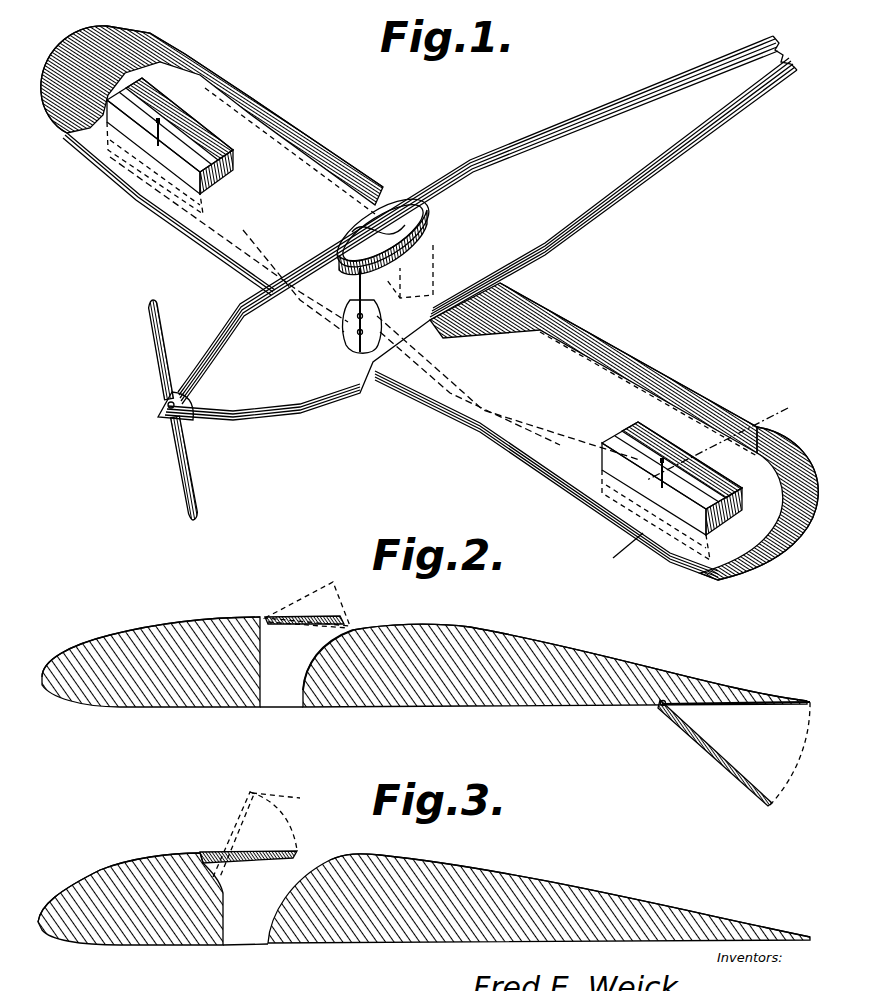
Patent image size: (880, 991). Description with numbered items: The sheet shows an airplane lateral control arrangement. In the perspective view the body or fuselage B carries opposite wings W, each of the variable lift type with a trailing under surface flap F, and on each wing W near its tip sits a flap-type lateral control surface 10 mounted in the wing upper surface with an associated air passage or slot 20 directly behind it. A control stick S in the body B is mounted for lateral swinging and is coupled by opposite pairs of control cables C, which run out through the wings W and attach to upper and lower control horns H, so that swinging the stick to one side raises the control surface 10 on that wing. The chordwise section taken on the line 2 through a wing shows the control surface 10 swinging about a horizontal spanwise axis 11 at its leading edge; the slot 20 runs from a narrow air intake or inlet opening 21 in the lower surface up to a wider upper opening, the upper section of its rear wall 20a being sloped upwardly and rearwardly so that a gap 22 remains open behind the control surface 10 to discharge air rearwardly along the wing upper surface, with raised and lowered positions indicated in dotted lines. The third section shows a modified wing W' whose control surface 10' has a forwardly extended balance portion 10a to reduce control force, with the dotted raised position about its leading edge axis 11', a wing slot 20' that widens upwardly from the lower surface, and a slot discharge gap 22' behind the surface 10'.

In FIG. 1, the body or fuselage B is at (568, 203).
In FIG. 1, the wing W is at (429, 303).
In FIG. 2, the wing W is at (424, 647).
In FIG. 1, the trailing under surface flap F is at (295, 140).
In FIG. 2, the trailing under surface flap F is at (717, 757).
In FIG. 1, the section line 2— 2 is at (702, 486).
In FIG. 1, the lateral control surface 10 is at (424, 306).
In FIG. 2, the lateral control surface 10 is at (327, 603).
In FIG. 1, the gap 22 is at (435, 290).
In FIG. 2, the gap 22 is at (555, 649).
In FIG. 1, the control horn H is at (160, 122).
In FIG. 1, the air passage or slot 20 is at (428, 368).
In FIG. 2, the air passage or slot 20 is at (157, 679).
In FIG. 1, the air intake or inlet opening 21 is at (203, 190).
In FIG. 2, the air intake or inlet opening 21 is at (290, 707).
In FIG. 1, the control stick S is at (376, 308).
In FIG. 1, the control cables C is at (240, 253).
In FIG. 2, the rear wall of the slot 20a is at (357, 635).
In FIG. 2, the horizontal spanwise axis 11 is at (304, 593).
In FIG. 3, the forwardly extended balance portion 10a is at (200, 852).
In FIG. 3, the raised slat 11' is at (223, 834).
In FIG. 3, the lateral control surface 10' is at (288, 819).
In FIG. 3, the slot discharge gap 22' is at (539, 883).
In FIG. 3, the wing slot 20' is at (153, 922).
In FIG. 3, the wing W' is at (424, 889).